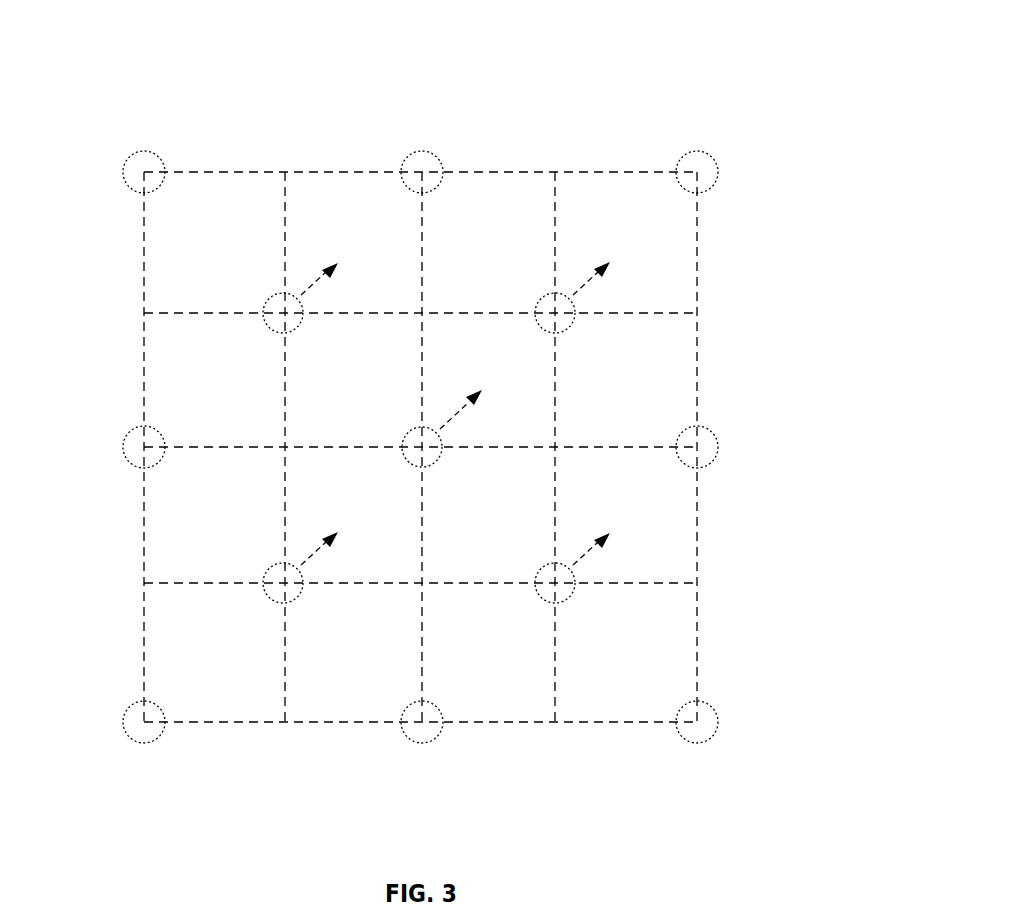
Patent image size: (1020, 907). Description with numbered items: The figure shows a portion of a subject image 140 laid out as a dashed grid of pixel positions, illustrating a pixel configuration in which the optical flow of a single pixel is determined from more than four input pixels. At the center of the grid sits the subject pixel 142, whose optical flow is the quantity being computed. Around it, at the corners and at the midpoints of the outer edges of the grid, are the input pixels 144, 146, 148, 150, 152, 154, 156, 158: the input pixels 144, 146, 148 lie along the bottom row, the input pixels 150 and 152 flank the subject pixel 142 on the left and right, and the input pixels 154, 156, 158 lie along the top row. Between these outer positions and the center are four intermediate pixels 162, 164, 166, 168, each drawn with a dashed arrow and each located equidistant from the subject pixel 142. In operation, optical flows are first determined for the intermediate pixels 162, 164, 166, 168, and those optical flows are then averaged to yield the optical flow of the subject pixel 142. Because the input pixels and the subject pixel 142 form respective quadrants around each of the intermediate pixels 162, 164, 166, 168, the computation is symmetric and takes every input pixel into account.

The subject image 140 is at (735, 71).
The subject pixel 142 is at (420, 445).
The input pixel 144 is at (148, 722).
The input pixel 146 is at (425, 720).
The input pixel 148 is at (697, 722).
The input pixel 150 is at (138, 446).
The input pixel 152 is at (700, 444).
The input pixel 154 is at (140, 172).
The input pixel 156 is at (420, 172).
The input pixel 158 is at (695, 168).
The intermediate pixel 162 is at (279, 580).
The intermediate pixel 164 is at (551, 580).
The intermediate pixel 166 is at (279, 310).
The intermediate pixel 168 is at (551, 310).